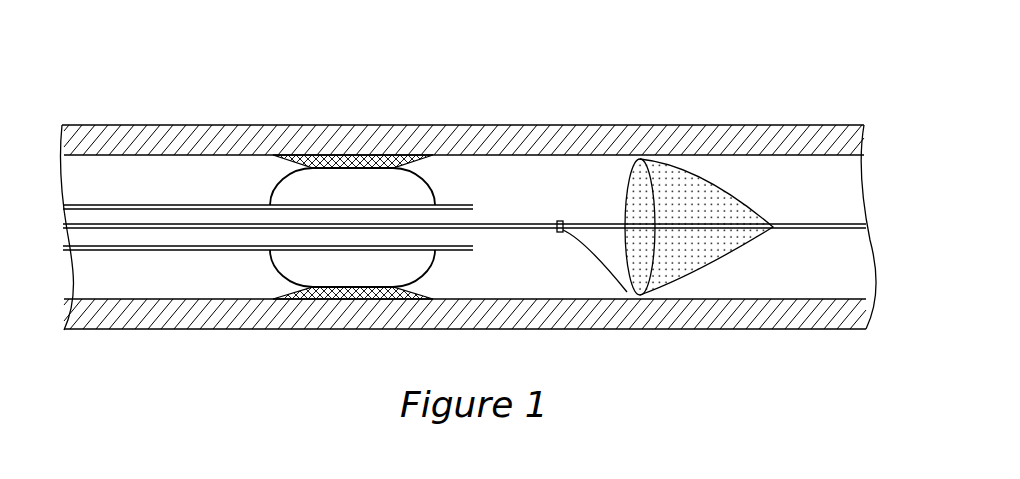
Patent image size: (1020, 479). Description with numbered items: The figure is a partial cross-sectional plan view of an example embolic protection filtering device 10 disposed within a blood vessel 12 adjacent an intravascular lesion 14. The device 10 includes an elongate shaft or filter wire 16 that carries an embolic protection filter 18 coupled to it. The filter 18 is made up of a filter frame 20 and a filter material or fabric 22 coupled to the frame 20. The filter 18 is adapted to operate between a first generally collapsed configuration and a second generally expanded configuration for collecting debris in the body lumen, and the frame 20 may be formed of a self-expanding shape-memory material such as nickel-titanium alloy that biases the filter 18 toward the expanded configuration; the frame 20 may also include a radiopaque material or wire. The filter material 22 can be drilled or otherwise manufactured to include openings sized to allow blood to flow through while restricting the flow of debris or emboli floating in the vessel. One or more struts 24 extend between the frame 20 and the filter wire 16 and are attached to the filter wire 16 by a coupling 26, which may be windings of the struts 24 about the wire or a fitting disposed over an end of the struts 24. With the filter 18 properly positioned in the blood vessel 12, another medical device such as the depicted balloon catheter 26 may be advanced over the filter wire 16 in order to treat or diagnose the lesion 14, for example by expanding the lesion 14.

The embolic protection filtering device 10 is at (603, 208).
The blood vessel 12 is at (403, 135).
The intravascular lesion 14 is at (318, 160).
The filter wire 16 is at (500, 224).
The embolic protection filter 18 is at (717, 174).
The filter frame 20 is at (630, 180).
The filter material 22 is at (665, 182).
The struts 24 is at (612, 280).
The catheter 26 is at (160, 192).